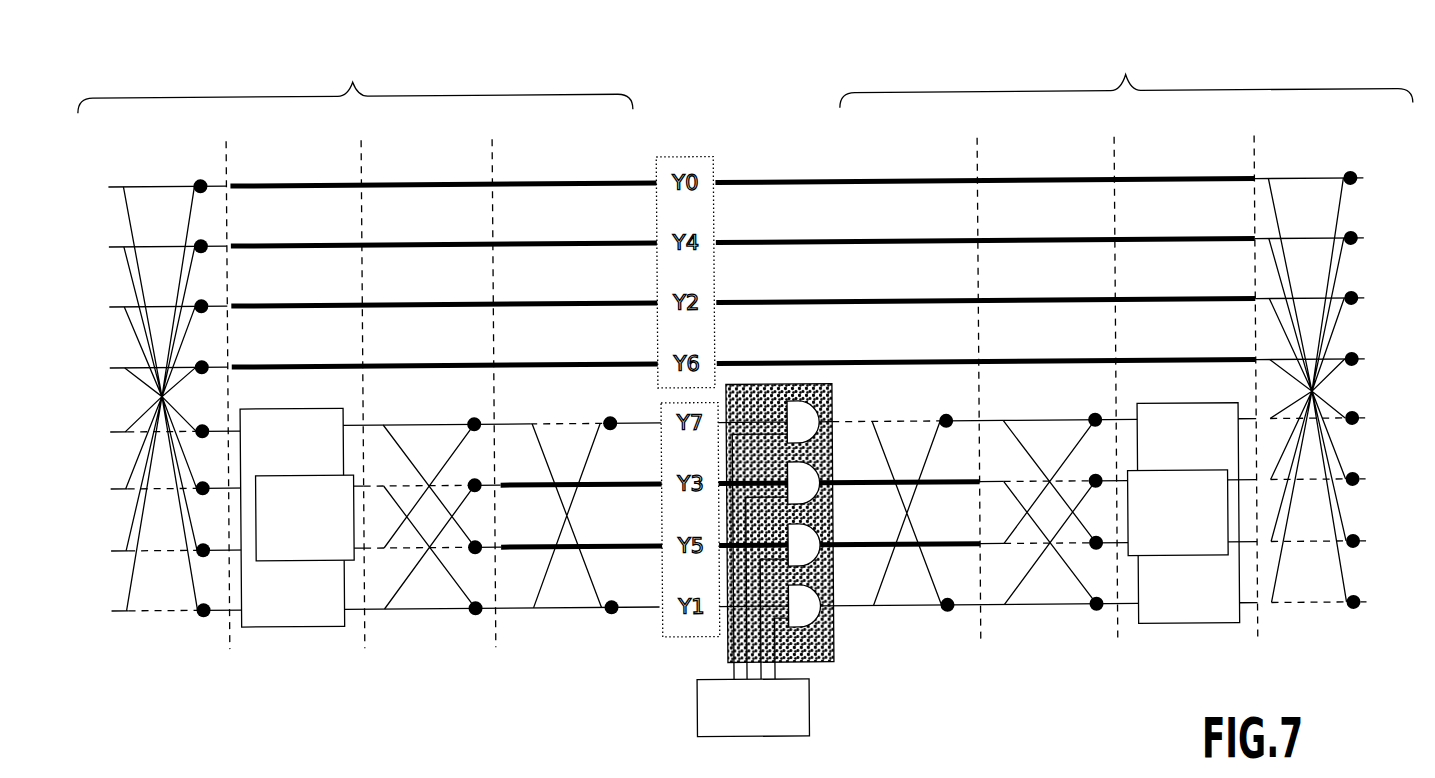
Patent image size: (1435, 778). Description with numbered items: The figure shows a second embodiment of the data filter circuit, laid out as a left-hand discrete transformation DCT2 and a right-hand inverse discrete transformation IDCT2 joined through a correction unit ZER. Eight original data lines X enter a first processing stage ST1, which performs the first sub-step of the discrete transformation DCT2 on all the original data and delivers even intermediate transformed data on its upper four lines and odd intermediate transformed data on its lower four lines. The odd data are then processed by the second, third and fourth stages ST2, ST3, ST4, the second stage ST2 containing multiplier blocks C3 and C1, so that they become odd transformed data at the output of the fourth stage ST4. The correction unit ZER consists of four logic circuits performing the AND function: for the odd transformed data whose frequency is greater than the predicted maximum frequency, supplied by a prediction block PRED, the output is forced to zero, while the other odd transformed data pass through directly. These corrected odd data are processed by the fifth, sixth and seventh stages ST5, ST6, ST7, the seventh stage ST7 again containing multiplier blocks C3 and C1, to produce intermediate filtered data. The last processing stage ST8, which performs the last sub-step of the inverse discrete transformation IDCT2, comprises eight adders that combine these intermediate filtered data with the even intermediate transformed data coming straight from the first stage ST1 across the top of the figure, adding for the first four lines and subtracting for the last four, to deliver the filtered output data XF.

The discrete transformation DCT2 is at (354, 80).
The inverse discrete transformation IDCT2 is at (1125, 71).
The input samples X is at (147, 371).
The filtered output samples XF is at (1402, 363).
The first processing stage ST1 is at (190, 385).
The second stage ST2 is at (320, 384).
The third stage ST3 is at (500, 382).
The fourth stage ST4 is at (567, 366).
The fifth stage ST5 is at (978, 381).
The sixth stage ST6 is at (1058, 381).
The seventh stage ST7 is at (1209, 381).
The last processing stage ST8 is at (1310, 363).
The multiplier coefficient C3 is at (740, 516).
The multiplier coefficient C1 is at (742, 515).
The correction unit ZER is at (832, 658).
The prediction unit PRED is at (753, 708).